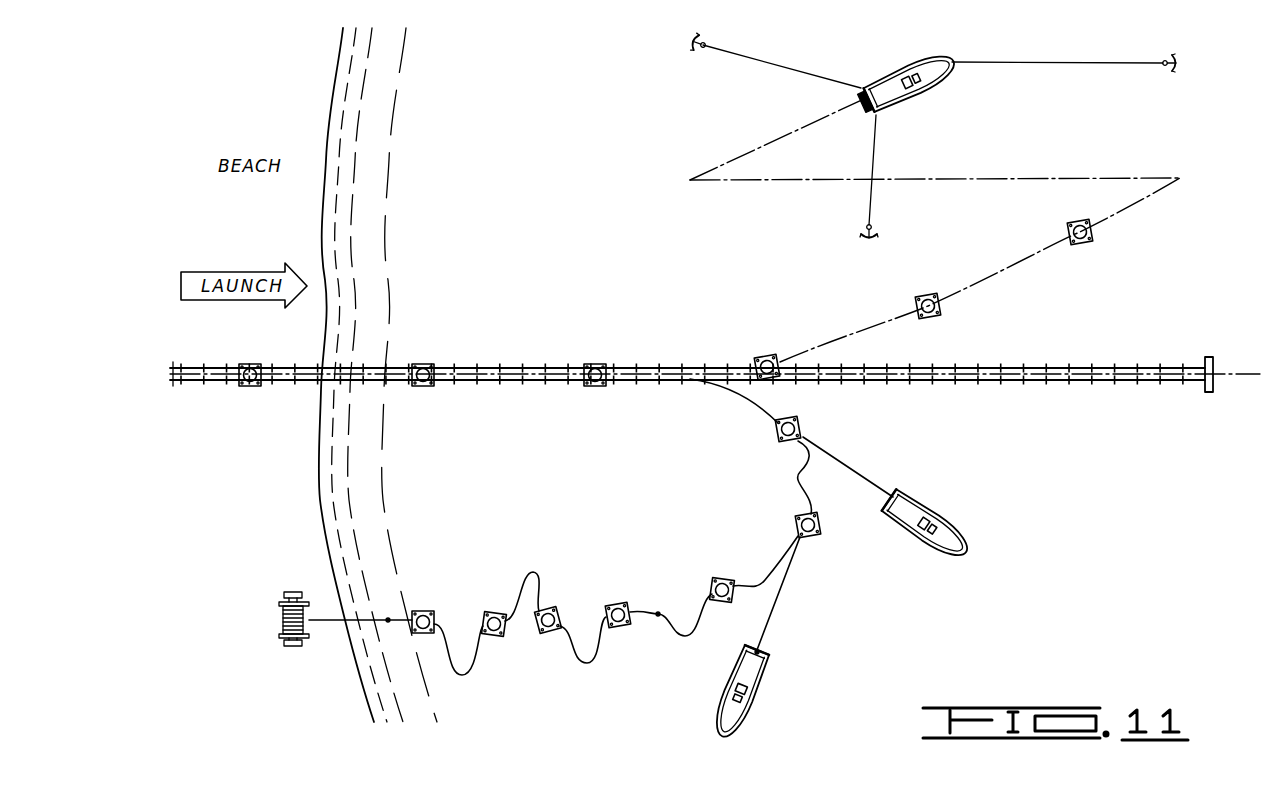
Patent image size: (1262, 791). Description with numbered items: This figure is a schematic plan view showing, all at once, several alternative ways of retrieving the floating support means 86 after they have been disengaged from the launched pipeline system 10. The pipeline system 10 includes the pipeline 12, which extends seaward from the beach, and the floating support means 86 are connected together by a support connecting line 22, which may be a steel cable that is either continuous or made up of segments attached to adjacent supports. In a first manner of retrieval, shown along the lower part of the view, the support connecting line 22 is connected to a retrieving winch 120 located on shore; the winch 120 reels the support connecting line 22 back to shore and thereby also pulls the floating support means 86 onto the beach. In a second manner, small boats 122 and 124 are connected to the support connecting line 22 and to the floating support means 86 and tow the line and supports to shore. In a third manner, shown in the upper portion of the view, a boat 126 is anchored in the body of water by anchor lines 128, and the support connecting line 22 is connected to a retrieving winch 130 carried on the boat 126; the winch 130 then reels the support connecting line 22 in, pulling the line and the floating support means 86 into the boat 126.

The pipeline system 10 is at (715, 362).
The pipeline 12 is at (1053, 378).
The support connecting line 22 is at (388, 620).
The floating support means 86 is at (422, 363).
The retrieving winch 120 is at (279, 620).
The boat 122 is at (920, 498).
The boat 124 is at (765, 678).
The boat 126 is at (910, 96).
The anchor lines 128 is at (766, 66).
The retrieving winch 130 is at (858, 95).